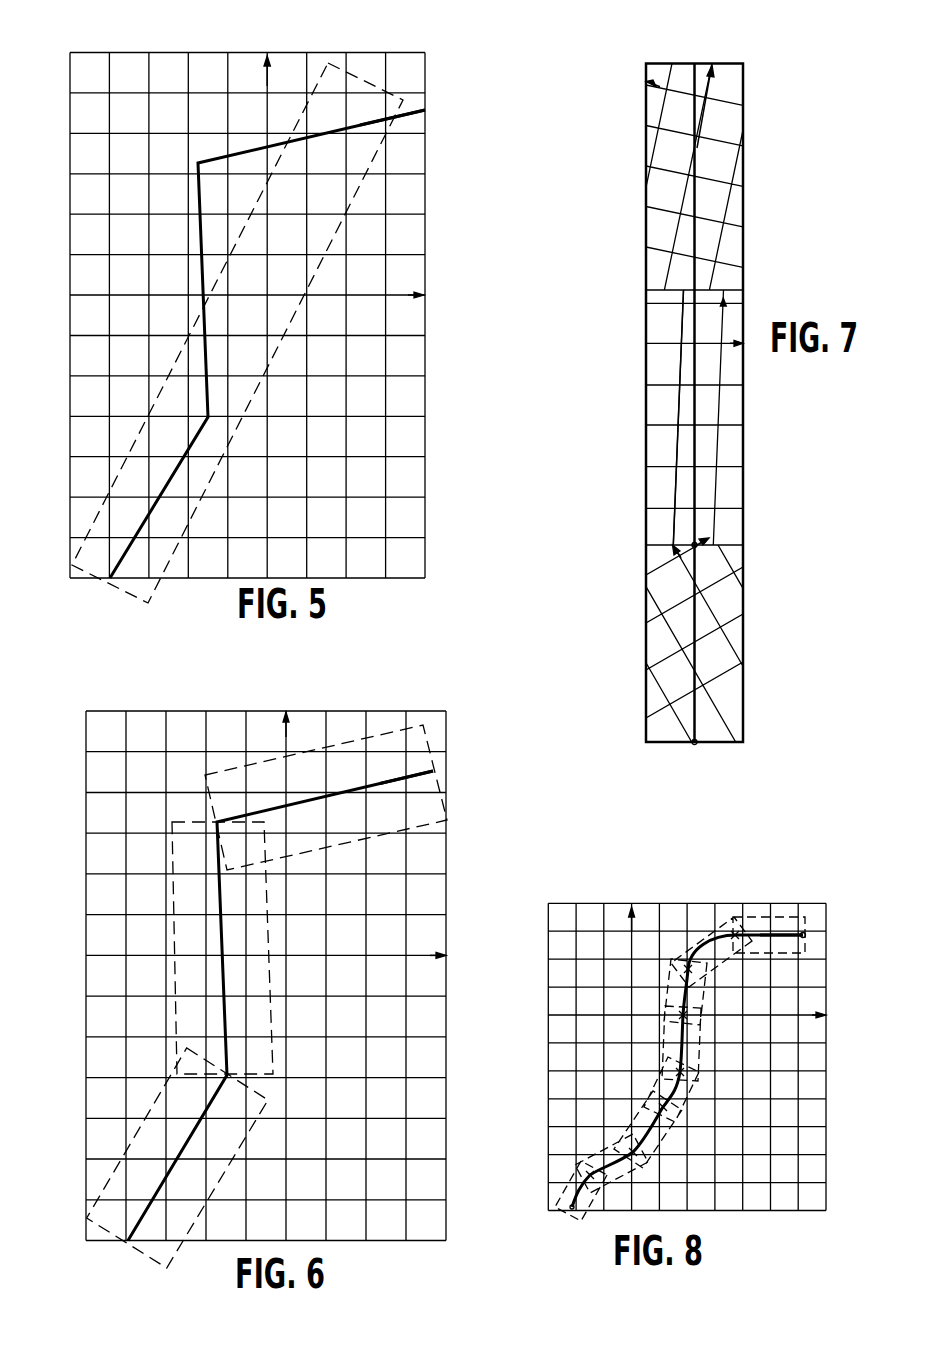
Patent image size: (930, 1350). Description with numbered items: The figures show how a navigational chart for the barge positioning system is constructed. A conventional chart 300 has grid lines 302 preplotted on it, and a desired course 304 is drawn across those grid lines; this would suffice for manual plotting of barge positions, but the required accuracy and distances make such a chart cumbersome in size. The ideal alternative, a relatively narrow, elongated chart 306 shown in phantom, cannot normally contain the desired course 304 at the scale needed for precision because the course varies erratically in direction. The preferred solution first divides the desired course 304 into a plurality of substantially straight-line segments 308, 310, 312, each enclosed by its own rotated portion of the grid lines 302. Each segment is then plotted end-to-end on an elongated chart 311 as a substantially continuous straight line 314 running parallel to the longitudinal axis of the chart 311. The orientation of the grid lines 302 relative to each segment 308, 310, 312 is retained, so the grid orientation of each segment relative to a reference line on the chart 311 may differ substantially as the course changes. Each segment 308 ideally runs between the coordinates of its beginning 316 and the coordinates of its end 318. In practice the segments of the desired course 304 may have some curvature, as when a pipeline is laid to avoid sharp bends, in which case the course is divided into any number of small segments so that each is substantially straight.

In FIG. 5, the chart 300 is at (425, 152).
In FIG. 5, the grid lines 302 is at (266, 84).
In FIG. 6, the grid lines 302 is at (204, 728).
In FIG. 7, the grid lines 302 is at (713, 220).
In FIG. 8, the grid lines 302 is at (686, 920).
In FIG. 5, the desired course 304 is at (396, 109).
In FIG. 6, the desired course 304 is at (422, 772).
In FIG. 8, the desired course 304 is at (783, 933).
In FIG. 5, the elongated chart 306 is at (372, 82).
In FIG. 8, the elongated chart 306 is at (597, 1150).
In FIG. 6, the straight-line segment 308 is at (145, 1212).
In FIG. 7, the straight-line segment 308 is at (697, 630).
In FIG. 6, the straight-line segment 310 is at (222, 958).
In FIG. 7, the straight-line segment 310 is at (695, 457).
In FIG. 7, the chart 311 is at (646, 108).
In FIG. 6, the straight-line segment 312 is at (395, 783).
In FIG. 7, the straight-line segment 312 is at (694, 197).
In FIG. 7, the straight line 314 is at (695, 408).
In FIG. 7, the beginning of segment 316 is at (696, 744).
In FIG. 7, the end of segment 318 is at (698, 544).